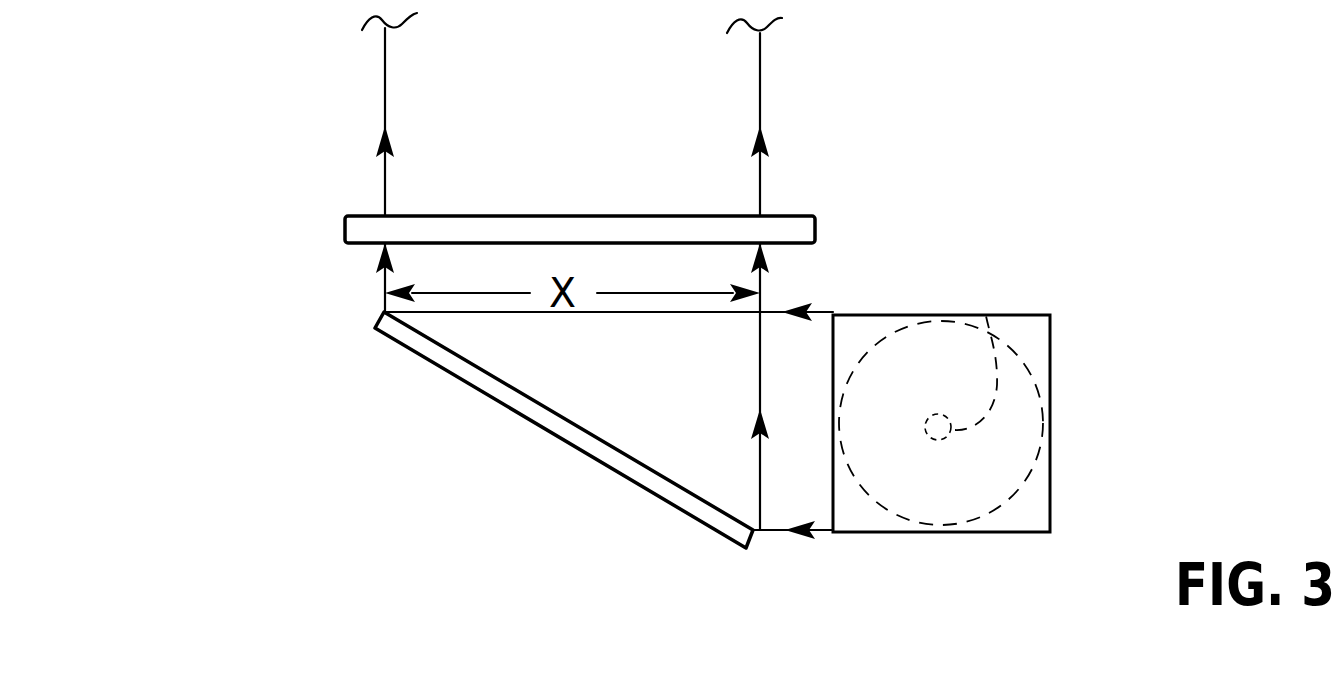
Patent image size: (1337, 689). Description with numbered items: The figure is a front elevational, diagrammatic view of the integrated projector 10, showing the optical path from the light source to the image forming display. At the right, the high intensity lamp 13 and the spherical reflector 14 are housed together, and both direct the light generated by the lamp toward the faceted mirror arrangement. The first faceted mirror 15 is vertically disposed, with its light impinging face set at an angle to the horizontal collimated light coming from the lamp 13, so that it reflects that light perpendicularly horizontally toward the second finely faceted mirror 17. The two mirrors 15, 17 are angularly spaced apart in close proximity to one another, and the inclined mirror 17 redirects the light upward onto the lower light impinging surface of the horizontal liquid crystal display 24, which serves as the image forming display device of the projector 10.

The integrated projector 10 is at (1062, 100).
The high intensity lamp 13 is at (986, 316).
The spherical reflector 14 is at (1050, 503).
The first faceted mirror 15 is at (1095, 418).
The faceted mirror 17 is at (510, 458).
The liquid crystal display 24 is at (240, 226).